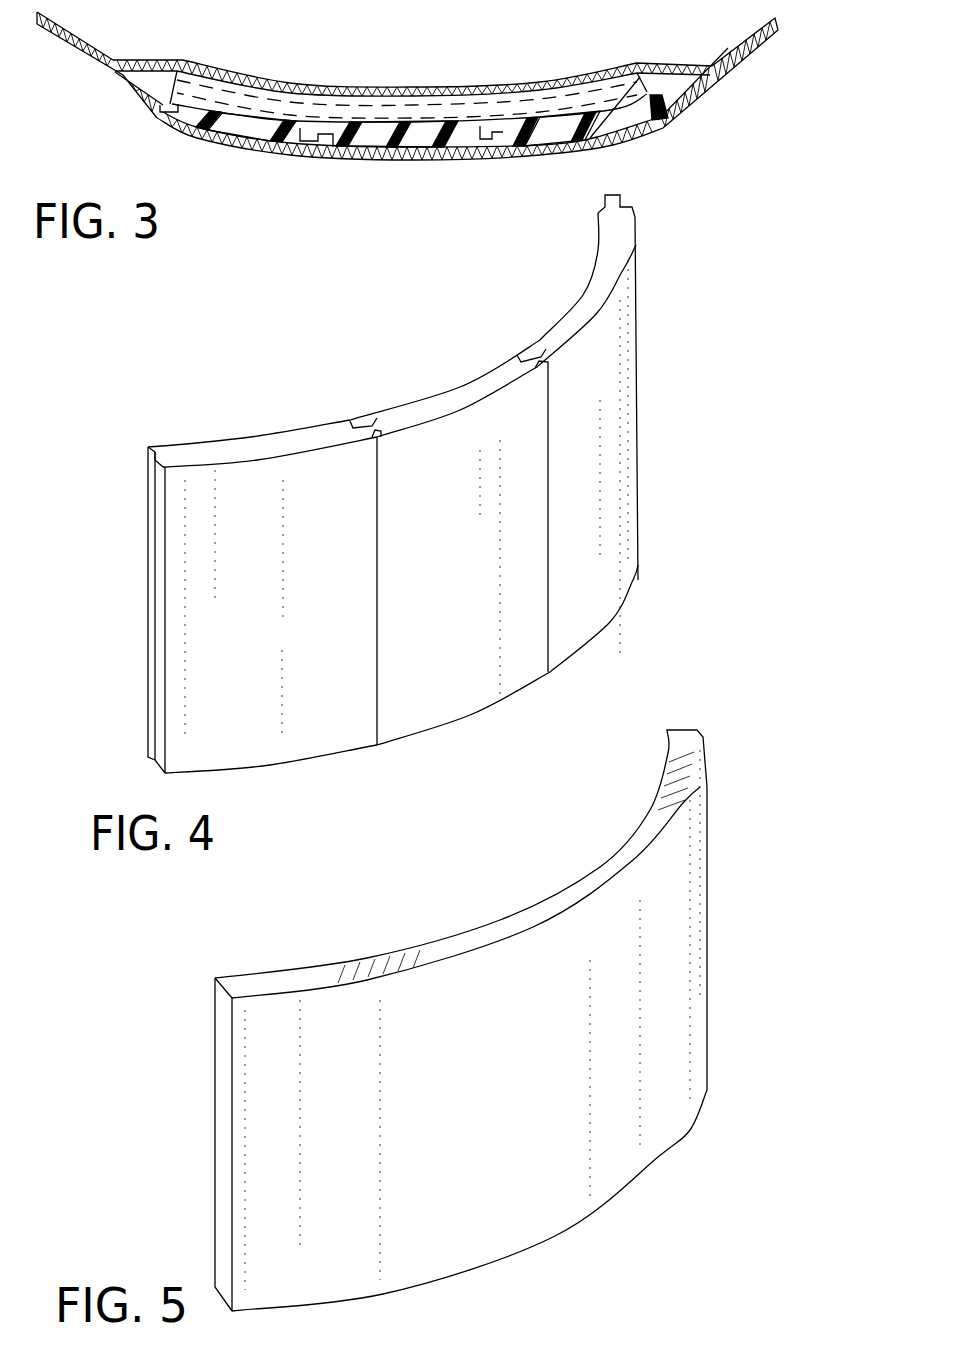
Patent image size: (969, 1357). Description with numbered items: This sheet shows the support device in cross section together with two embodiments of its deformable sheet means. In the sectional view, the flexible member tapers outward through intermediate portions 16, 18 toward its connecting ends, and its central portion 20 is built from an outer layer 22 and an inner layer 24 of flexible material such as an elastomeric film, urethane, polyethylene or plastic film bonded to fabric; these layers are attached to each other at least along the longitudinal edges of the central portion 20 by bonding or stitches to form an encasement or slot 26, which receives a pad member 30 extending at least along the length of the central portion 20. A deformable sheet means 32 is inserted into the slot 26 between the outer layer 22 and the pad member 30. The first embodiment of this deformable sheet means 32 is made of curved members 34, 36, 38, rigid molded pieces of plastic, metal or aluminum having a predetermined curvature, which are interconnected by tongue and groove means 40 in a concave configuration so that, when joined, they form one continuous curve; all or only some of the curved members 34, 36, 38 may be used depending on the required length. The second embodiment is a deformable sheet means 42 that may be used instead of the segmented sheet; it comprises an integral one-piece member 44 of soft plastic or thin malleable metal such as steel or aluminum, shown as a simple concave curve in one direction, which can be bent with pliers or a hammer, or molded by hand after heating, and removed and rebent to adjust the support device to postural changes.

In FIG. 3, the intermediate portion 16 is at (767, 43).
In FIG. 3, the intermediate portion 18 is at (57, 38).
In FIG. 3, the central portion 20 is at (361, 187).
In FIG. 3, the outer layer 22 is at (197, 142).
In FIG. 3, the inner layer 24 is at (297, 83).
In FIG. 3, the slot 26 is at (703, 93).
In FIG. 3, the pad member 30 is at (427, 107).
In FIG. 3, the deformable sheet means 32 is at (398, 159).
In FIG. 4, the deformable sheet means 32 is at (664, 369).
In FIG. 3, the curved member 34 is at (600, 128).
In FIG. 4, the curved member 34 is at (620, 260).
In FIG. 3, the curved member 36 is at (433, 157).
In FIG. 4, the curved member 36 is at (460, 387).
In FIG. 3, the curved member 38 is at (260, 130).
In FIG. 4, the curved member 38 is at (193, 453).
In FIG. 3, the tongue and groove means 40 is at (401, 136).
In FIG. 4, the tongue and groove means 40 is at (358, 409).
In FIG. 5, the deformable sheet means 42 is at (731, 890).
In FIG. 5, the integral one-piece member 44 is at (535, 917).